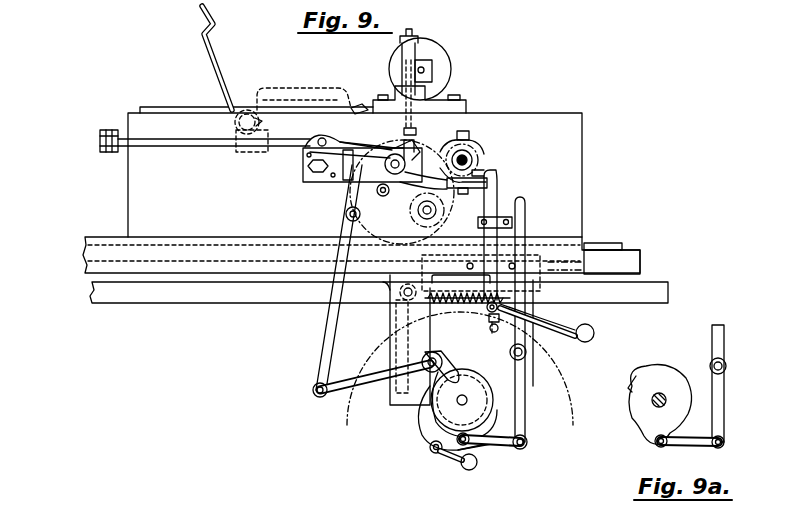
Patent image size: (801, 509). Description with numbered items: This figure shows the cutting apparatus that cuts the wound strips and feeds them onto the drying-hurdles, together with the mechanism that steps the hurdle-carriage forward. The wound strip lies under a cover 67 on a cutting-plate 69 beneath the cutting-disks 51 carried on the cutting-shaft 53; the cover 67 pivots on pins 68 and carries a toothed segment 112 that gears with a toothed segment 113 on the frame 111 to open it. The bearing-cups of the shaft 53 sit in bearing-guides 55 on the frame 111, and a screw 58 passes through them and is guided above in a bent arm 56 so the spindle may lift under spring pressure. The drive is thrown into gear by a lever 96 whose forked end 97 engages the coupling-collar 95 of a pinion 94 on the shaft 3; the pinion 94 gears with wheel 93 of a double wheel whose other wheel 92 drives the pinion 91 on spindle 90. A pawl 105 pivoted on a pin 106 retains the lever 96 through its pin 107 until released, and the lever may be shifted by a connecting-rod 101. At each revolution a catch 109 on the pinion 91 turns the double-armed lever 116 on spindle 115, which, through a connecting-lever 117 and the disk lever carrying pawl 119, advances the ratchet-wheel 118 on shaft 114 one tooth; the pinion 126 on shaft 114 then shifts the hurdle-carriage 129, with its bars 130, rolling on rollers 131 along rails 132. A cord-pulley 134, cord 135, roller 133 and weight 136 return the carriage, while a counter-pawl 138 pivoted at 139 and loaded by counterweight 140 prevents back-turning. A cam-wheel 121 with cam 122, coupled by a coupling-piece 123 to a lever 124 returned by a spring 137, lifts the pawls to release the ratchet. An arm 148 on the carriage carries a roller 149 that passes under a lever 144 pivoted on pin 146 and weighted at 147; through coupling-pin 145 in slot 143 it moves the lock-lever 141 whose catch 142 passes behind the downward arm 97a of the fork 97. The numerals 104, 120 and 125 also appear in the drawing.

In FIG. 9, the shaft 3 is at (468, 160).
In FIG. 9, the cutting-disks 51 is at (436, 51).
In FIG. 9, the cutting-shaft 53 is at (433, 70).
In FIG. 9, the bearing-guides 55 is at (442, 92).
In FIG. 9, the bent arm 56 is at (403, 60).
In FIG. 9, the screw 58 is at (414, 33).
In FIG. 9, the cover 67 is at (206, 44).
In FIG. 9, the pins 68 is at (248, 111).
In FIG. 9, the cutting-plate 69 is at (305, 104).
In FIG. 9, the spindle 90 is at (416, 152).
In FIG. 9, the pinion 91 is at (412, 206).
In FIG. 9, the wheel 92 is at (436, 211).
In FIG. 9, the wheel 93 is at (470, 222).
In FIG. 9, the pinion 94 is at (475, 166).
In FIG. 9, the coupling-collar 95 is at (398, 160).
In FIG. 9, the lever 96 is at (200, 147).
In FIG. 9, the forked end 97 is at (470, 147).
In FIG. 9, the downwardly-prolonged arm 97a is at (488, 182).
In FIG. 9, the connecting-rod 101 is at (98, 138).
In FIG. 9, the slot 104 is at (358, 172).
In FIG. 9, the pawl 105 is at (352, 142).
In FIG. 9, the pin 106 is at (330, 140).
In FIG. 9, the pin 107 is at (304, 160).
In FIG. 9, the catch 109 is at (383, 196).
In FIG. 9, the frame 111 is at (568, 145).
In FIG. 9, the toothed segment 112 is at (259, 124).
In FIG. 9, the toothed segment 113 is at (256, 152).
In FIG. 9, the shaft 114 is at (466, 402).
In FIG. 9A, the shaft 114 is at (661, 397).
In FIG. 9, the spindle 115 is at (346, 215).
In FIG. 9, the double-armed lever 116 is at (342, 256).
In FIG. 9, the connecting-lever 117 is at (386, 378).
In FIG. 9, the ratchet-wheel 118 is at (495, 392).
In FIG. 9, the pawl 119 is at (442, 356).
In FIG. 9, the pivot 120 is at (428, 354).
In FIG. 9A, the cam-wheel 121 is at (642, 402).
In FIG. 9, the cam 122 is at (430, 400).
In FIG. 9A, the cam 122 is at (636, 385).
In FIG. 9, the coupling-piece 123 is at (495, 443).
In FIG. 9A, the coupling-piece 123 is at (692, 441).
In FIG. 9, the lever 124 is at (525, 213).
In FIG. 9A, the lever 124 is at (724, 403).
In FIG. 9, the pivot pin 125 is at (526, 354).
In FIG. 9A, the pivot pin 125 is at (726, 366).
In FIG. 9, the pinion 126 is at (375, 326).
In FIG. 9, the hurdle-carriage 129 is at (628, 263).
In FIG. 9, the bars 130 is at (592, 243).
In FIG. 9, the rollers 131 is at (582, 262).
In FIG. 9, the rails 132 is at (204, 300).
In FIG. 9, the roller 133 is at (404, 284).
In FIG. 9, the cord-pulley 134 is at (490, 402).
In FIG. 9, the cord 135 is at (430, 322).
In FIG. 9, the weight 136 is at (384, 396).
In FIG. 9, the spring 137 is at (455, 300).
In FIG. 9, the counter-pawl 138 is at (422, 432).
In FIG. 9, the pivot 139 is at (437, 453).
In FIG. 9, the counterweight 140 is at (471, 468).
In FIG. 9, the lock-lever 141 is at (512, 224).
In FIG. 9, the catch 142 is at (497, 171).
In FIG. 9, the slot 143 is at (490, 319).
In FIG. 9, the lever 144 is at (560, 327).
In FIG. 9, the coupling-pin 145 is at (487, 308).
In FIG. 9, the pin 146 is at (522, 306).
In FIG. 9, the weight 147 is at (592, 333).
In FIG. 9, the arm 148 is at (470, 268).
In FIG. 9, the roller 149 is at (494, 332).